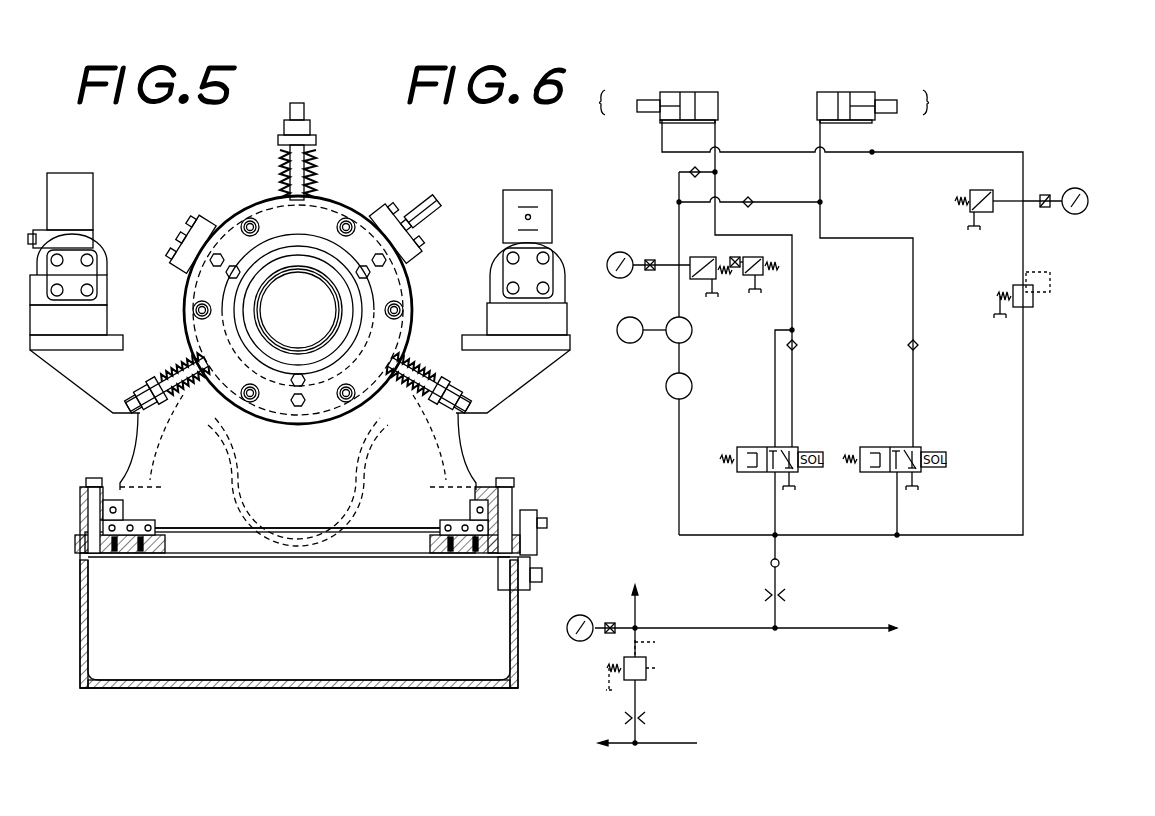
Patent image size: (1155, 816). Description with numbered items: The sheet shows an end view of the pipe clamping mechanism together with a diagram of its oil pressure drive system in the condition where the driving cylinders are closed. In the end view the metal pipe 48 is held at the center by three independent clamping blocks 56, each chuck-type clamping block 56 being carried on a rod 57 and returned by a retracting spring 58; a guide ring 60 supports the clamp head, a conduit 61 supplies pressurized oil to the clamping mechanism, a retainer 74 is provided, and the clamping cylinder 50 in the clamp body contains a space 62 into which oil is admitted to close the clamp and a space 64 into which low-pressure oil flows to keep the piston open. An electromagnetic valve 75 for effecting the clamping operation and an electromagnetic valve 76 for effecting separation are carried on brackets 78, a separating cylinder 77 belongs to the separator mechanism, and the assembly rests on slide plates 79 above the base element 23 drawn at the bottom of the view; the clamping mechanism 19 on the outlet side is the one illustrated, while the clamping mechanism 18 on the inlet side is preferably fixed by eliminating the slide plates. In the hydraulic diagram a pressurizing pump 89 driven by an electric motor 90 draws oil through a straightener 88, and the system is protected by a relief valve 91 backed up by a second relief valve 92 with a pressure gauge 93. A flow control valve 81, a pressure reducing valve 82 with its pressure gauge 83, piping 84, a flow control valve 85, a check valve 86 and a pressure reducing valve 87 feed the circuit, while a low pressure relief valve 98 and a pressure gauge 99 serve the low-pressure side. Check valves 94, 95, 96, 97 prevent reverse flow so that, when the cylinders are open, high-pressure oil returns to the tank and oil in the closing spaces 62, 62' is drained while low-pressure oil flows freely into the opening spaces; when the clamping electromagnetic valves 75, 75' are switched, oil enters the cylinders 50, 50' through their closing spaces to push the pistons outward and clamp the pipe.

In FIG. 6, the clamping mechanism on the inlet side 18 is at (593, 102).
In FIG. 6, the clamping mechanism on the outlet side 19 is at (938, 102).
In FIG. 5, the base 23 is at (299, 707).
In FIG. 5, the metal pipe 48 is at (298, 310).
In FIG. 5, the cylinder 50 is at (298, 355).
In FIG. 6, the cylinder 50 is at (823, 116).
In FIG. 6, the clamping cylinder 50' is at (713, 106).
In FIG. 5, the clamping block 56 is at (298, 310).
In FIG. 5, the rod 57 is at (305, 110).
In FIG. 5, the retracting spring 58 is at (284, 166).
In FIG. 5, the guide ring 60 is at (355, 245).
In FIG. 5, the conduit 61 is at (436, 216).
In FIG. 6, the space in the cylinder 62 is at (846, 91).
In FIG. 6, the body of oil for closing the clamping mechanism 62' is at (693, 93).
In FIG. 6, the space in the cylinder 64 is at (658, 119).
In FIG. 5, the retainer 74 is at (400, 288).
In FIG. 5, the electromagnetic valve for effecting a clamping operation 75 is at (529, 196).
In FIG. 6, the electromagnetic valve for effecting a clamping operation 75 is at (895, 457).
In FIG. 6, the clamping electromagnetic valve 75' is at (773, 457).
In FIG. 5, the electromagnetic valve for effecting separation 76 is at (94, 200).
In FIG. 5, the separating cylinder 77 is at (340, 535).
In FIG. 5, the brackets 78 is at (300, 384).
In FIG. 5, the slide plates 79 is at (299, 620).
In FIG. 6, the flow control valve 81 is at (642, 718).
In FIG. 6, the pressure reducing valve 82 is at (646, 673).
In FIG. 6, the pressure gauge 83 is at (587, 637).
In FIG. 6, the piping 84 is at (746, 665).
In FIG. 6, the flow control valve 85 is at (782, 595).
In FIG. 6, the check valve 86 is at (780, 563).
In FIG. 6, the pressure reducing valve 87 is at (1025, 295).
In FIG. 6, the straightener 88 is at (691, 386).
In FIG. 6, the pressurizing pump 89 is at (691, 330).
In FIG. 6, the electric motor 90 is at (635, 339).
In FIG. 6, the relief valve 91 is at (711, 266).
In FIG. 6, the second relief valve 92 is at (754, 264).
In FIG. 6, the pressure gauge 93 is at (638, 274).
In FIG. 6, the check valve 94 is at (684, 164).
In FIG. 6, the check valve 95 is at (743, 193).
In FIG. 6, the check valve 96 is at (805, 351).
In FIG. 6, the check valve 97 is at (926, 351).
In FIG. 6, the low pressure relief valve 98 is at (986, 199).
In FIG. 6, the pressure gauge 99 is at (1070, 190).